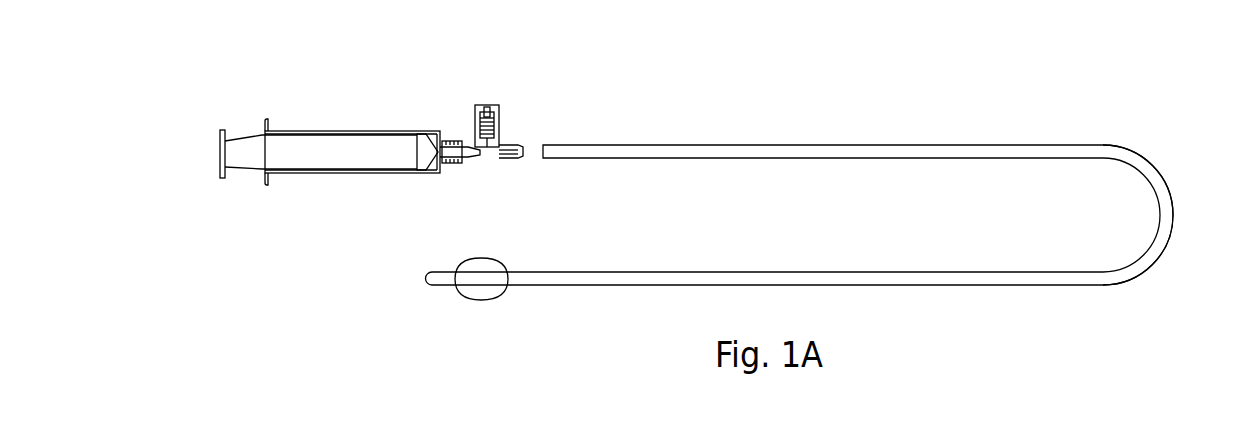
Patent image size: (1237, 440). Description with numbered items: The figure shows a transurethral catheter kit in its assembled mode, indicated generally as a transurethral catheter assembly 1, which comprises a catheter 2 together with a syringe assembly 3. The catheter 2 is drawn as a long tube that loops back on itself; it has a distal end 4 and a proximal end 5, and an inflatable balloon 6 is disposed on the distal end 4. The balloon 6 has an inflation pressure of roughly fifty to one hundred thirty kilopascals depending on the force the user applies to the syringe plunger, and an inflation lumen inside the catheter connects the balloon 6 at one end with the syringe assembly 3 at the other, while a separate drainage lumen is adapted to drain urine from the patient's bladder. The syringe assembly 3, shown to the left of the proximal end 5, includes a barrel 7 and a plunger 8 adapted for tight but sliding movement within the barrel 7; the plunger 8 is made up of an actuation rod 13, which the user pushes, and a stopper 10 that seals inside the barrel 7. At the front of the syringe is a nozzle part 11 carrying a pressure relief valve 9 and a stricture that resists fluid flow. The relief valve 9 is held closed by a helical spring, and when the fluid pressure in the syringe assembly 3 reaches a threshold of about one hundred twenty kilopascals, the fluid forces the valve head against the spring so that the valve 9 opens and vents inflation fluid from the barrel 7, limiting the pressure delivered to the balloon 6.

The transurethral catheter assembly 1 is at (897, 115).
The catheter 2 is at (1125, 152).
The syringe assembly 3 is at (315, 122).
The distal end 4 is at (507, 252).
The proximal end 5 is at (563, 132).
The inflatable balloon 6 is at (482, 297).
The barrel 7 is at (312, 172).
The plunger 8 is at (428, 173).
The pressure relief valve 9 is at (500, 107).
The stopper 10 is at (430, 148).
The nozzle part 11 is at (508, 158).
The actuation rod 13 is at (227, 130).